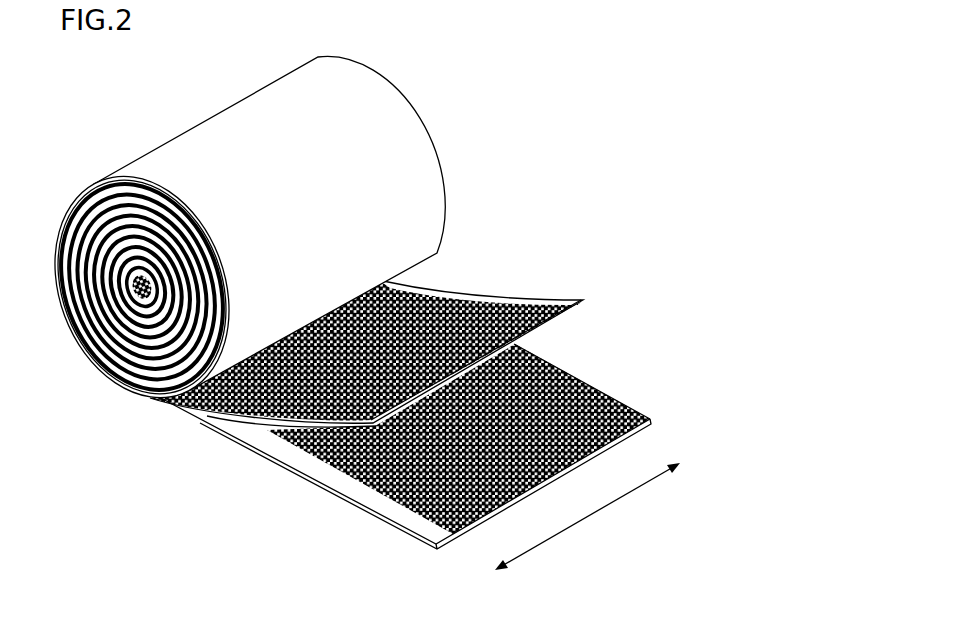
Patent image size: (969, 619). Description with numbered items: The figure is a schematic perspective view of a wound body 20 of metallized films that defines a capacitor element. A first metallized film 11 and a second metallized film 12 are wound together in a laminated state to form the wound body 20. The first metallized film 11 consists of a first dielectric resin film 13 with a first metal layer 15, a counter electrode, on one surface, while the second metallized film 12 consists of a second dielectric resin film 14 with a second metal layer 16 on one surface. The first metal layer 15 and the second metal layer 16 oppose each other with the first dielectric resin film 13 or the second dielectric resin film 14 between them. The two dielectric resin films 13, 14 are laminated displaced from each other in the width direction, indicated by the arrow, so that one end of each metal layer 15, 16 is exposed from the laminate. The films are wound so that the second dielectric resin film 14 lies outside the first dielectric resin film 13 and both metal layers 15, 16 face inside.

The wound body of metallized films 20 is at (500, 104).
The first metallized film 11 is at (367, 295).
The first dielectric resin film 13 is at (583, 204).
The first metal layer 15 is at (523, 307).
The second metallized film 12 is at (395, 465).
The second dielectric resin film 14 is at (297, 458).
The second metal layer 16 is at (347, 480).